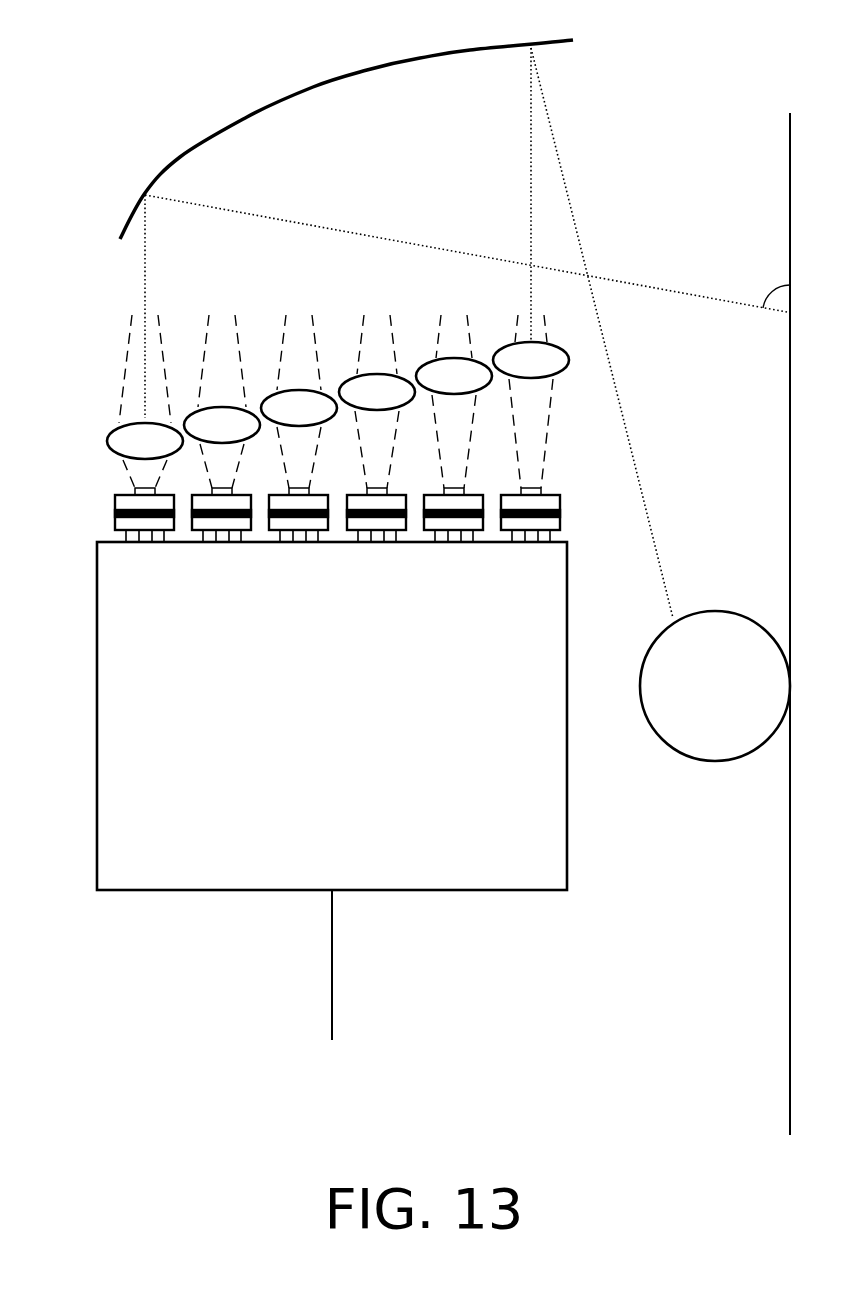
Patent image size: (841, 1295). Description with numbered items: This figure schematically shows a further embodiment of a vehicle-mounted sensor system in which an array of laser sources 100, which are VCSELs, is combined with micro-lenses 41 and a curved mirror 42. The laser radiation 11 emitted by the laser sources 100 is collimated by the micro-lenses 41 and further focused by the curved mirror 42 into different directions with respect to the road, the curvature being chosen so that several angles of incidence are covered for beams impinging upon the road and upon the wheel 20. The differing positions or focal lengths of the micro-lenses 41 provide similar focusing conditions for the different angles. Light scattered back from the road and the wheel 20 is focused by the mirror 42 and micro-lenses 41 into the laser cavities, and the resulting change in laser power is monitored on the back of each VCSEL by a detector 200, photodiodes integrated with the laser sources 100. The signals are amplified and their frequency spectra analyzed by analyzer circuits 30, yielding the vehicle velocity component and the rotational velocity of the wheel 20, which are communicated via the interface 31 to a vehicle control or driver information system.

The curved mirror 42 is at (368, 70).
The laser radiation 11 is at (146, 258).
The micro-lenses 41 is at (108, 441).
The laser sources 100 is at (115, 500).
The detector 200 is at (115, 522).
The analyzer circuits 30 is at (332, 716).
The interface 31 is at (332, 965).
The wheel 20 is at (715, 686).